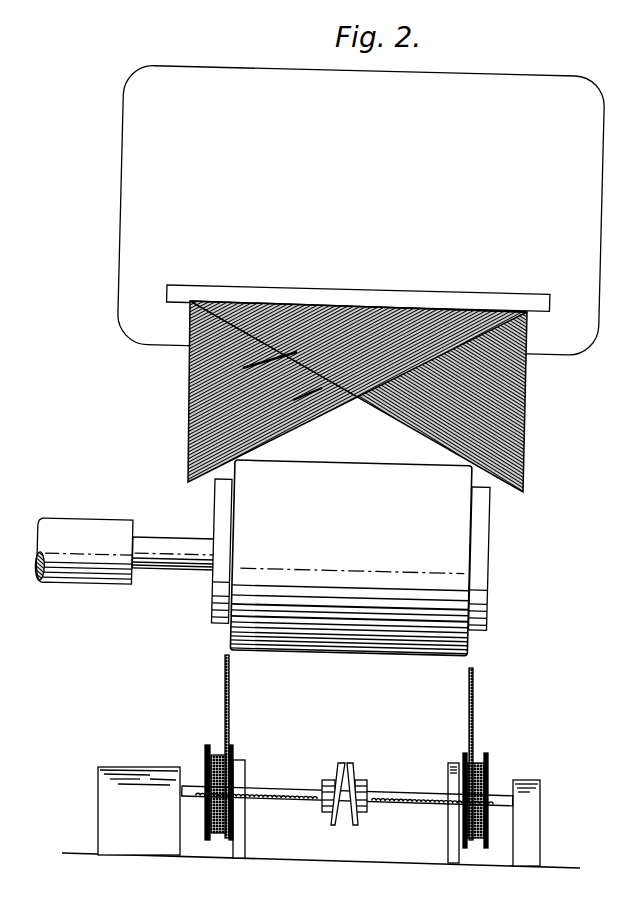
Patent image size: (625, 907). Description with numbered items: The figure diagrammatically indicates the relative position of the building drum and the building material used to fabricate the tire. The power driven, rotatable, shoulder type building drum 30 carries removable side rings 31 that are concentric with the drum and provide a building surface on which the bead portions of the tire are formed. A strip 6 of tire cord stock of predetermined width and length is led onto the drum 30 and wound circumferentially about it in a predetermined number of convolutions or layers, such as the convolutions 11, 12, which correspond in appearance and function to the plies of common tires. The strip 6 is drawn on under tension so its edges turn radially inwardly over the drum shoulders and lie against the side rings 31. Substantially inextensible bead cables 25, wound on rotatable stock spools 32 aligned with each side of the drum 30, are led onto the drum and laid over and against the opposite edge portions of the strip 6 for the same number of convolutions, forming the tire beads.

The strip of tire cord stock 6 is at (355, 373).
The convolution 11 is at (198, 443).
The convolution 12 is at (515, 450).
The building drum 30 is at (464, 568).
The side rings 31 is at (215, 511).
The bead cables 25 is at (227, 668).
The stock spools 32 is at (205, 757).